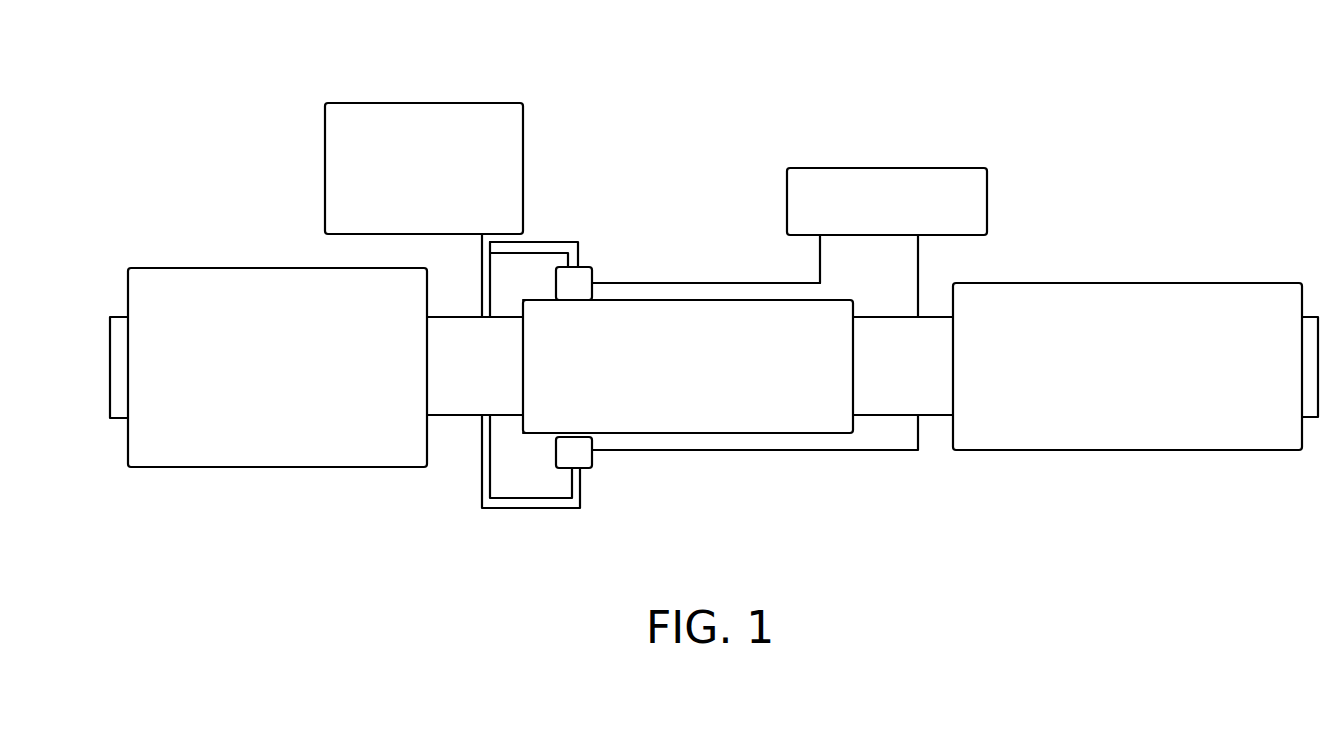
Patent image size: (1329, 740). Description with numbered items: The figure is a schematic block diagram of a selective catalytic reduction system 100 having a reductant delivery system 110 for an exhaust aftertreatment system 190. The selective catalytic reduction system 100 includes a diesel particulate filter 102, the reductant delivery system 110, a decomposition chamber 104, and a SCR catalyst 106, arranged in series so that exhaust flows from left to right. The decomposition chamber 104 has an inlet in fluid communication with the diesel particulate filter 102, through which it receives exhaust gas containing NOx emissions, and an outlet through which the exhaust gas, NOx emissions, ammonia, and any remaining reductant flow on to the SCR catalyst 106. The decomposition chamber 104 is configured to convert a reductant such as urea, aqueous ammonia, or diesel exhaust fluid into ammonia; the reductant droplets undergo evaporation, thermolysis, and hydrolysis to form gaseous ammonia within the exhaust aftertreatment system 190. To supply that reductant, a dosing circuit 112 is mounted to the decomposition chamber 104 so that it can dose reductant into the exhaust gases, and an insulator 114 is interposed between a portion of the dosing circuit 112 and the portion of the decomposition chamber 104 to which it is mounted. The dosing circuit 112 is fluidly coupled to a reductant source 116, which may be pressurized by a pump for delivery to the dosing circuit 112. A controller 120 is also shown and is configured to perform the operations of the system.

The selective catalytic reduction system 100 is at (1152, 235).
The diesel particulate filter 102 is at (347, 467).
The decomposition chamber 104 is at (730, 300).
The SCR catalyst 106 is at (1260, 283).
The reductant delivery system 110 is at (618, 292).
The dosing circuit 112 is at (594, 278).
The insulator 114 is at (556, 296).
The reductant source 116 is at (483, 102).
The controller 120 is at (870, 168).
The exhaust aftertreatment system 190 is at (462, 433).